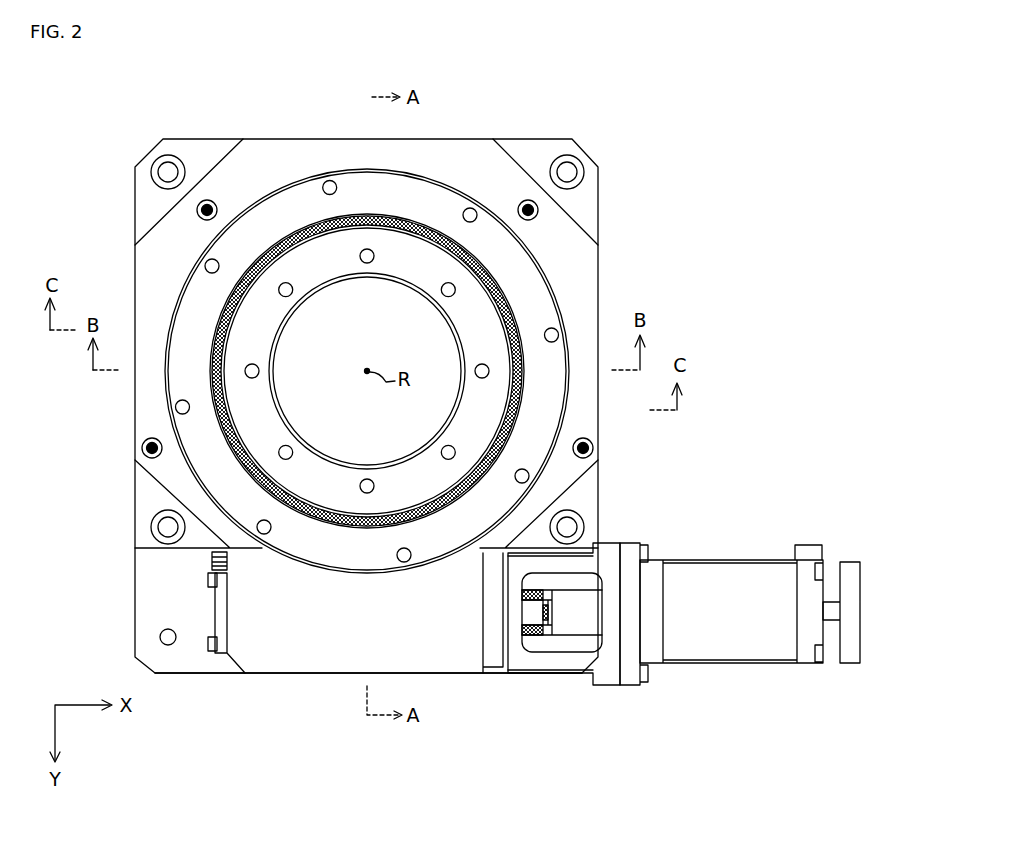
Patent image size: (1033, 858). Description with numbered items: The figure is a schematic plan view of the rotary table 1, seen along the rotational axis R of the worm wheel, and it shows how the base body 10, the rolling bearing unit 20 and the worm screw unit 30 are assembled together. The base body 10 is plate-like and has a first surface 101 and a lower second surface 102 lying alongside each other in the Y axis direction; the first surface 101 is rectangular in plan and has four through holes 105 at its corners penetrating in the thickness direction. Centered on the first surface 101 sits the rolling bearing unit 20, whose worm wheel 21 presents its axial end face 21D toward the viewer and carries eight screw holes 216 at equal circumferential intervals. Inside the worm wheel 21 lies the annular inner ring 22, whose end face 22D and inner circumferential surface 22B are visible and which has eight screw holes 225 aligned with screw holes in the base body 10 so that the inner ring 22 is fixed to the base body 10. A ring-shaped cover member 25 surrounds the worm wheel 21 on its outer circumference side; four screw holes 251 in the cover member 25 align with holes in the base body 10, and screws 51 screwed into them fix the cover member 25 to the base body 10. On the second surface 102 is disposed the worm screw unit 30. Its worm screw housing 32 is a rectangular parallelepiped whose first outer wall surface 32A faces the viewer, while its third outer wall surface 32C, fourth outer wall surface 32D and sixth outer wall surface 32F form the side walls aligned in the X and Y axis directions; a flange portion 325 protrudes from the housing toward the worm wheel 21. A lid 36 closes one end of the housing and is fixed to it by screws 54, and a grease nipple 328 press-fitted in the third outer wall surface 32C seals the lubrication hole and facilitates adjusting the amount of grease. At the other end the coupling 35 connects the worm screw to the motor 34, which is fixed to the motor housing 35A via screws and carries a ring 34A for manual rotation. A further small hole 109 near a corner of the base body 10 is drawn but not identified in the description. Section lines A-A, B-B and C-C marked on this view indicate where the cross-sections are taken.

The rotary table 1 is at (632, 110).
The base body 10 is at (135, 187).
The rolling bearing unit 20 is at (128, 388).
The worm wheel 21 is at (353, 187).
The end face of worm wheel 21D is at (320, 203).
The inner ring 22 is at (410, 248).
The inner circumferential surface of inner ring 22B is at (400, 290).
The end face of inner ring 22D is at (385, 240).
The cover member 25 is at (293, 186).
The screws 51 is at (203, 200).
The screw holes 251 is at (210, 200).
The through holes 105 is at (163, 157).
The screw holes 225 is at (480, 360).
The screw holes 216 is at (542, 333).
The first surface 101 is at (150, 536).
The second surface 102 is at (148, 583).
The grease nipple 328 is at (213, 563).
The hole 109 is at (156, 634).
The worm screw unit 30 is at (357, 692).
The worm screw housing 32 is at (446, 662).
The first outer wall surface 32A is at (267, 653).
The third outer wall surface 32C is at (208, 637).
The fourth outer wall surface 32D is at (490, 640).
The sixth outer wall surface 32F is at (314, 675).
The flange portion 325 is at (334, 560).
The lid 36 is at (220, 608).
The screws 54 is at (218, 617).
The coupling 35 is at (573, 623).
The motor housing 35A is at (613, 667).
The motor 34 is at (726, 645).
The ring 34A is at (851, 656).